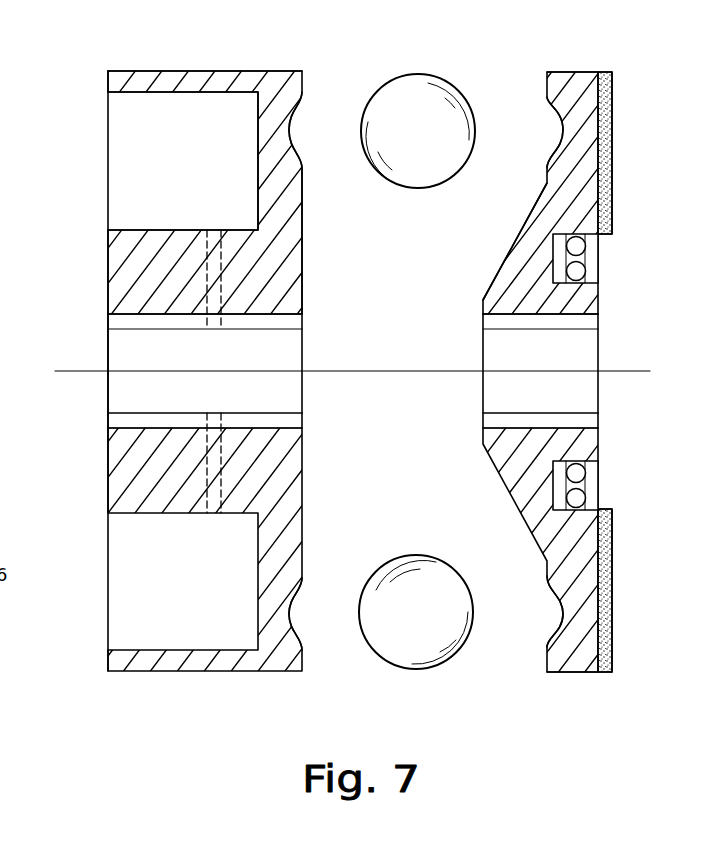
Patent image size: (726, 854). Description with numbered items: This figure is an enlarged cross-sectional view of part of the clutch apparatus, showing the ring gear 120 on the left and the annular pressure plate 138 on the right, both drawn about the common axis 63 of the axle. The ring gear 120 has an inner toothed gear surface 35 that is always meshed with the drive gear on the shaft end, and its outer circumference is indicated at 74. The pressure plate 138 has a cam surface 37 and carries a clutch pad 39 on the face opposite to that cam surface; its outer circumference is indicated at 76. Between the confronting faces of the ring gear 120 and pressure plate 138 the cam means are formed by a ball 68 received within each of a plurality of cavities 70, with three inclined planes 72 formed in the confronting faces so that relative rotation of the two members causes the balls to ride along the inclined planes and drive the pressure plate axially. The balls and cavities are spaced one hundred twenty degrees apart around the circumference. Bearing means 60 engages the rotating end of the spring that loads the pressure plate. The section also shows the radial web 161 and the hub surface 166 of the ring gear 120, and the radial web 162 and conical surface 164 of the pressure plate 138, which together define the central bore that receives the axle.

The inner toothed gear surface 35 is at (140, 92).
The cam surface 37 is at (302, 295).
The clutch pad 39 is at (612, 605).
The bearing means 60 is at (595, 270).
The axis of rotation 63 is at (85, 370).
The ball 68 is at (437, 147).
The cavity 70 is at (290, 130).
The inclined plane 72 is at (548, 118).
The outer circumference of ring gear 74 is at (198, 71).
The outer circumference of annular pressure plate 76 is at (565, 72).
The ring gear 120 is at (107, 480).
The pressure plate 138 is at (513, 504).
The web 161 is at (107, 337).
The web 162 is at (492, 331).
The conical surface 164 is at (512, 243).
The cylindrical surface 166 is at (303, 232).